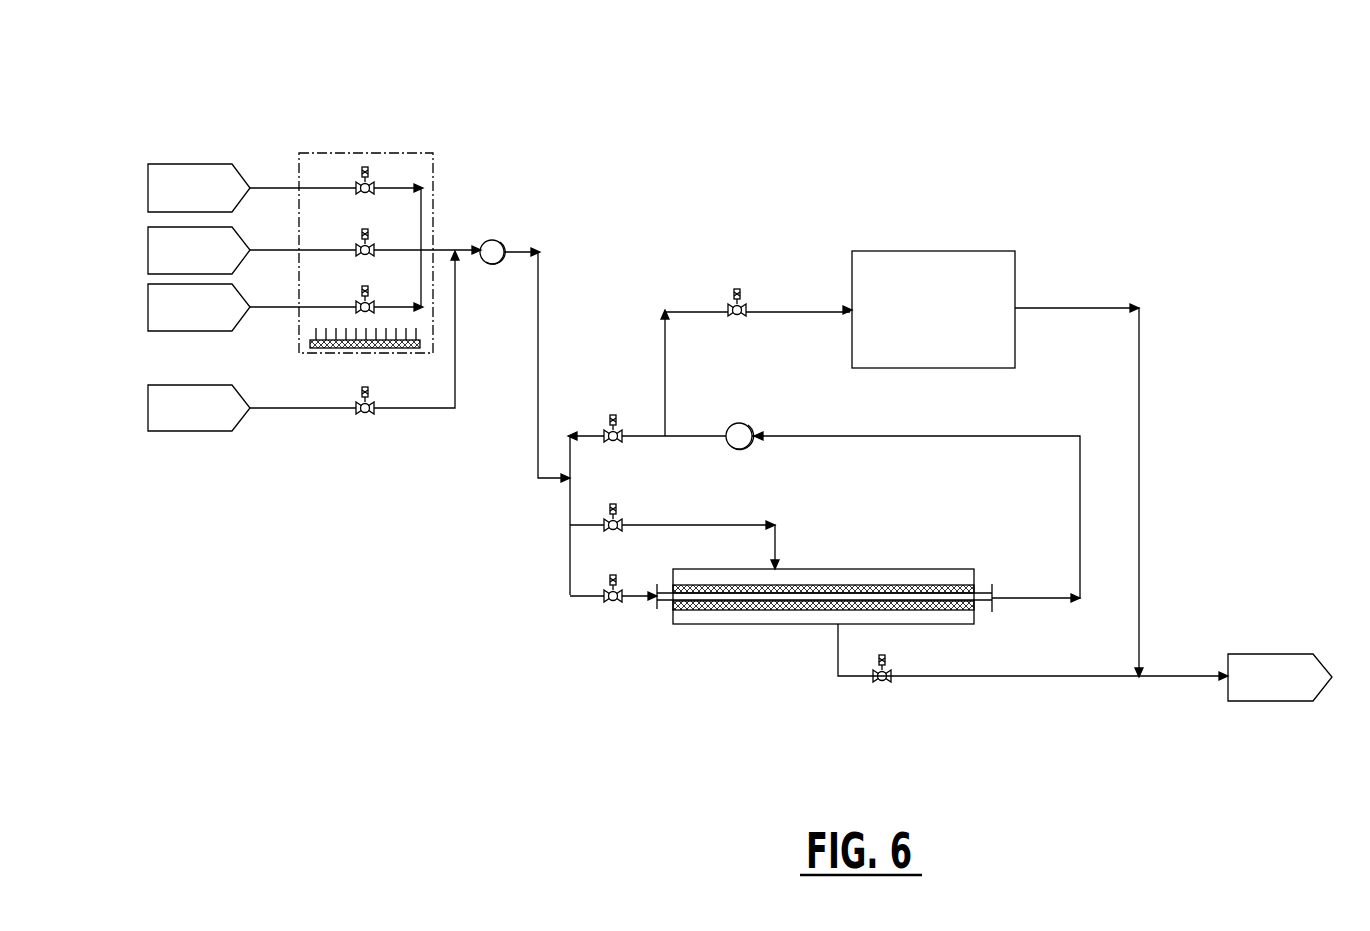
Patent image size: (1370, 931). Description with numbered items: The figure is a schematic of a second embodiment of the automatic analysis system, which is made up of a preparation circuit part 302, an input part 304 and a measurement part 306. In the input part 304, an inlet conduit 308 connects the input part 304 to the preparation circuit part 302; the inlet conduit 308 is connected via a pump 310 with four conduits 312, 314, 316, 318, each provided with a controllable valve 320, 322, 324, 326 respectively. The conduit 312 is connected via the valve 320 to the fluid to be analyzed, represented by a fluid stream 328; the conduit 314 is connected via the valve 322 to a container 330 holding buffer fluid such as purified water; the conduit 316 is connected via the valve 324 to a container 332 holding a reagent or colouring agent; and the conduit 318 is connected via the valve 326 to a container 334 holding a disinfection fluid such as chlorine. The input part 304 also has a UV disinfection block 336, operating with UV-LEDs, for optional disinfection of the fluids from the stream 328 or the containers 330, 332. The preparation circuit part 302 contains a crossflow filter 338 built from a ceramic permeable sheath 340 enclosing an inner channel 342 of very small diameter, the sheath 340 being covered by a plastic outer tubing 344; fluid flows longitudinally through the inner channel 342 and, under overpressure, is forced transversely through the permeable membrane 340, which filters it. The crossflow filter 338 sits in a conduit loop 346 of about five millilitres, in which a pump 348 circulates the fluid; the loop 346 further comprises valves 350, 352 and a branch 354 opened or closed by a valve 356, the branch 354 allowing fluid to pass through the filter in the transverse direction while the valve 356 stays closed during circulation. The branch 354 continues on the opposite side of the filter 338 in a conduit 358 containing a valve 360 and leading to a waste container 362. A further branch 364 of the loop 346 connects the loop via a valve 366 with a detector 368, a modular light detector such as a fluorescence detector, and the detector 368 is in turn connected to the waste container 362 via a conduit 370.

The preparation circuit part 302 is at (510, 656).
The input part 304 is at (508, 144).
The measurement part 306 is at (1005, 185).
The inlet conduit 308 is at (538, 315).
The pump 310 is at (492, 247).
The conduit 312 is at (407, 185).
The conduit 314 is at (403, 248).
The conduit 316 is at (403, 304).
The conduit 318 is at (427, 410).
The controllable valve 320 is at (363, 172).
The controllable valve 322 is at (370, 228).
The controllable valve 324 is at (362, 290).
The controllable valve 326 is at (365, 414).
The fluid stream 328 is at (192, 175).
The container 330 is at (185, 237).
The container 332 is at (192, 318).
The container 334 is at (203, 420).
The UV disinfection block 336 is at (305, 153).
The crossflow filter 338 is at (738, 655).
The permeable sheath 340 is at (783, 605).
The inner channel 342 is at (828, 593).
The outer tubing 344 is at (695, 622).
The conduit loop 346 is at (568, 503).
The pump 348 is at (745, 430).
The valve 350 is at (615, 448).
The valve 352 is at (617, 605).
The branch 354 is at (722, 525).
The valve 356 is at (615, 530).
The conduit 358 is at (1020, 677).
The valve 360 is at (885, 668).
The waste container 362 is at (1258, 690).
The branch 364 is at (665, 363).
The valve 366 is at (740, 300).
The detector 368 is at (930, 262).
The conduit 370 is at (1107, 307).